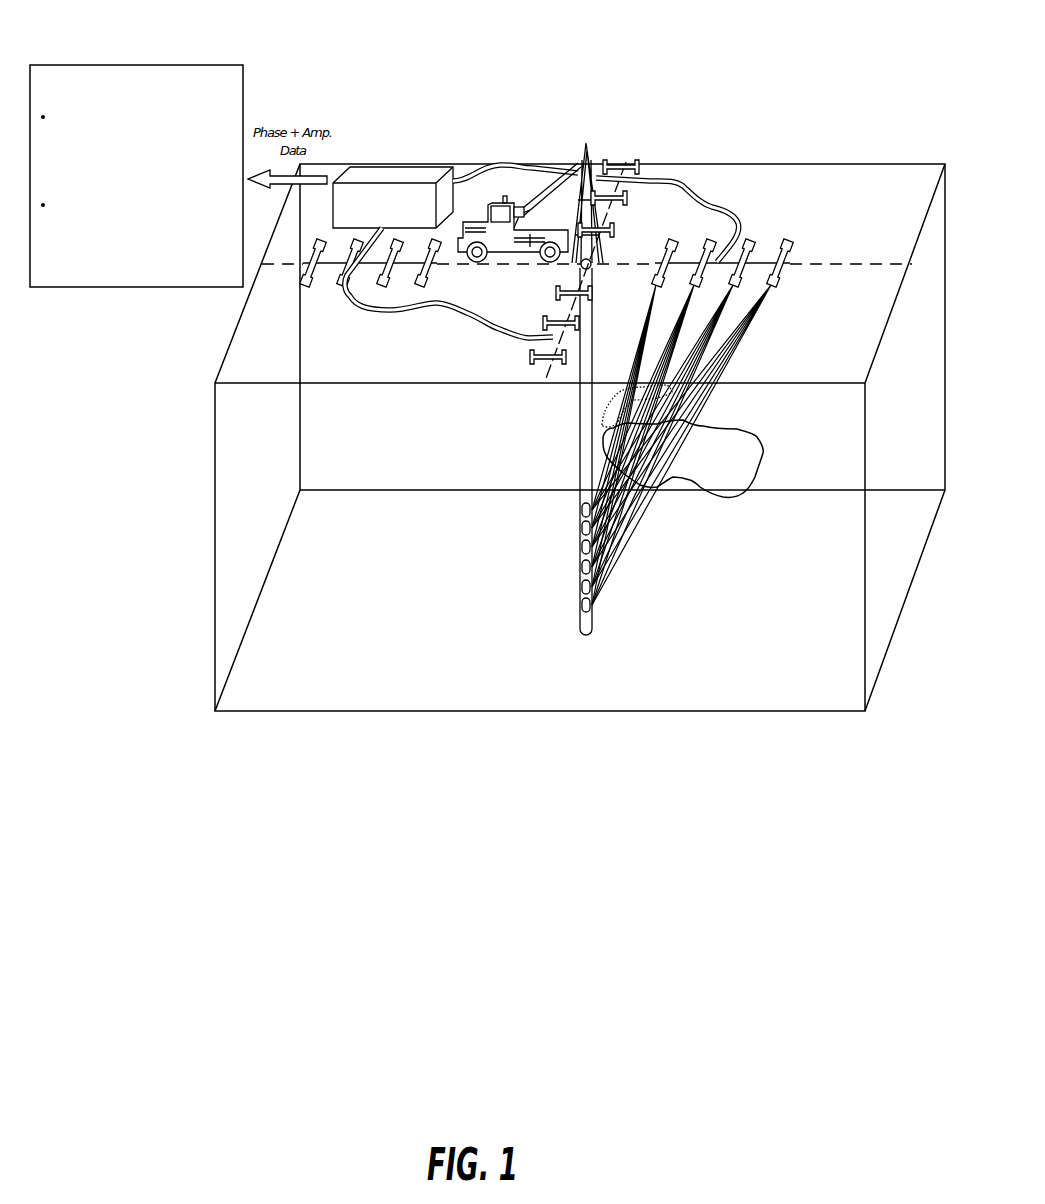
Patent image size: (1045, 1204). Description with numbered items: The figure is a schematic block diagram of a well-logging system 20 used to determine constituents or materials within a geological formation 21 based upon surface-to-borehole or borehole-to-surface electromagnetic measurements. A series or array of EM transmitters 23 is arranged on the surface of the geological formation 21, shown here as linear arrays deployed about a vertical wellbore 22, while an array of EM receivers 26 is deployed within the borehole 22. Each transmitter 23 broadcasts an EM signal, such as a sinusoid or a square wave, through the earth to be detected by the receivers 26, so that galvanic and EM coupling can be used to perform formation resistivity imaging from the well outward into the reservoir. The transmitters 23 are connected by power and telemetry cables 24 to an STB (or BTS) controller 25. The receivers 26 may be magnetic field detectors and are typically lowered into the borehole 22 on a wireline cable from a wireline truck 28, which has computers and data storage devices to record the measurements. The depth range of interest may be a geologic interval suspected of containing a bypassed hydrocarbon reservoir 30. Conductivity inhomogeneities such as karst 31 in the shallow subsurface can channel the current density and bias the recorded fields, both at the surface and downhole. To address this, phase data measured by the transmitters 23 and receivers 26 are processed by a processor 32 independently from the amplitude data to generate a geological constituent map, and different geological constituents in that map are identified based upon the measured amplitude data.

The well-logging system 20 is at (835, 98).
The geological formation 21 is at (767, 175).
The borehole 22 is at (580, 440).
The EM transmitters 23 is at (787, 240).
The power and telemetry cables 24 is at (682, 182).
The STB controller 25 is at (360, 167).
The EM receivers 26 is at (580, 507).
The wireline truck 28 is at (513, 207).
The reservoir 30 is at (759, 435).
The karst 31 is at (618, 397).
The processor 32 is at (213, 65).